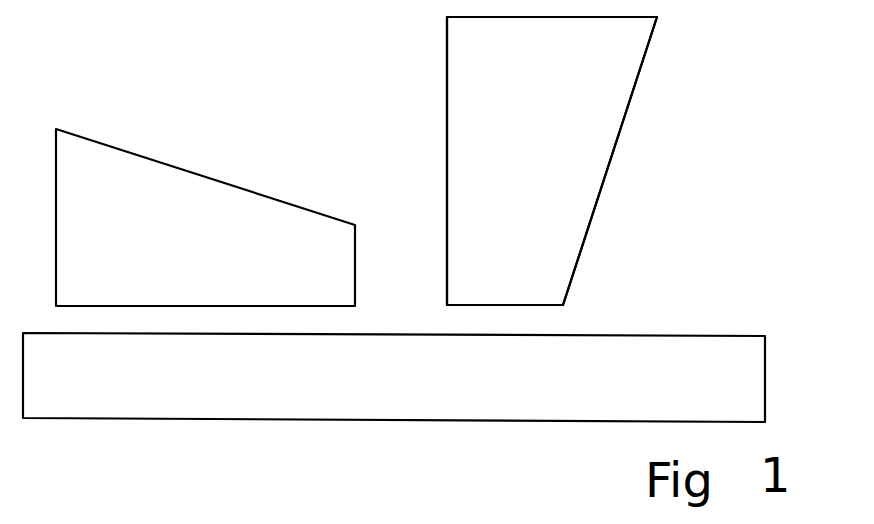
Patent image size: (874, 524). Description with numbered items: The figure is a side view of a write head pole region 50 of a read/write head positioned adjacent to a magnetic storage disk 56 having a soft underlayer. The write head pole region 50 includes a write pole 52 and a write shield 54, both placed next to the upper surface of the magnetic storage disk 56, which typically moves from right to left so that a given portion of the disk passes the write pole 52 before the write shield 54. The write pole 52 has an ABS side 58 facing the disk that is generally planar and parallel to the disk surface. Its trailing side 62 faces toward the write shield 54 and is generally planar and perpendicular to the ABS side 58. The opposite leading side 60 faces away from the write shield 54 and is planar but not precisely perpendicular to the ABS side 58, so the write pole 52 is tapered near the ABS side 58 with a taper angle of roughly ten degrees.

The write head pole region 50 is at (680, 210).
The write pole 52 is at (593, 80).
The write shield 54 is at (183, 215).
The magnetic storage disk 56 is at (280, 390).
The ABS side 58 is at (505, 307).
The leading side 60 is at (607, 175).
The trailing side 62 is at (445, 120).